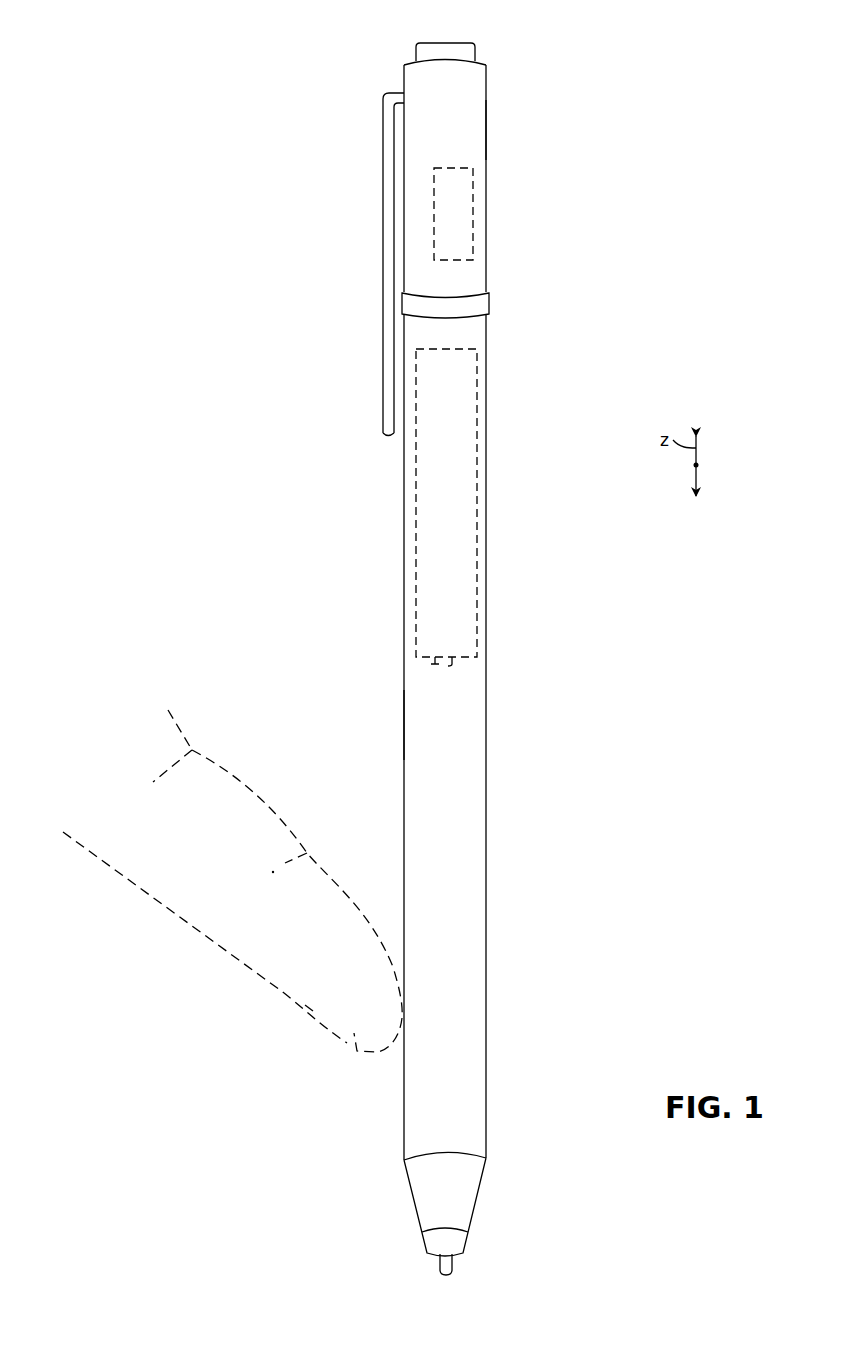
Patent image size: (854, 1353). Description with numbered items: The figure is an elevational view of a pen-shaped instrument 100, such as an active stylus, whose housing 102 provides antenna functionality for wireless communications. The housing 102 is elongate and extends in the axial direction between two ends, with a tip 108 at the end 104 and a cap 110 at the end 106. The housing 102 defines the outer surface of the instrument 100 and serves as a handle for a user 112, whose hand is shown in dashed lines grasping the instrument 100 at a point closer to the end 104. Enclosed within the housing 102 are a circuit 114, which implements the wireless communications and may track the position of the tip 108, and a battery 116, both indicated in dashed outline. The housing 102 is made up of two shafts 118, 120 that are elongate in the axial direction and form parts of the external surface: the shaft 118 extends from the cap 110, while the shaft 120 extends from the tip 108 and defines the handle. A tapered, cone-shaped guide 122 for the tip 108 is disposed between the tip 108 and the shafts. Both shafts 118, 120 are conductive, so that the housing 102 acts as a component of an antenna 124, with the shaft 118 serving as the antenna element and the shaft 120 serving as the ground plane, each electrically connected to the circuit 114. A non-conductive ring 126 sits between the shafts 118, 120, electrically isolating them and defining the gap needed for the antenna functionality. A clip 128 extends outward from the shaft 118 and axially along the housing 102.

The instrument 100 is at (130, 105).
The housing 102 is at (404, 604).
The end 104 is at (490, 1152).
The end 106 is at (490, 68).
The tip 108 is at (425, 1249).
The cap 110 is at (443, 42).
The user 112 is at (232, 881).
The circuit 114 is at (471, 214).
The battery 116 is at (475, 481).
The shaft 118 is at (477, 126).
The shaft 120 is at (404, 716).
The guide 122 is at (477, 1198).
The antenna 124 is at (522, 258).
The ring 126 is at (489, 298).
The clip 128 is at (383, 170).